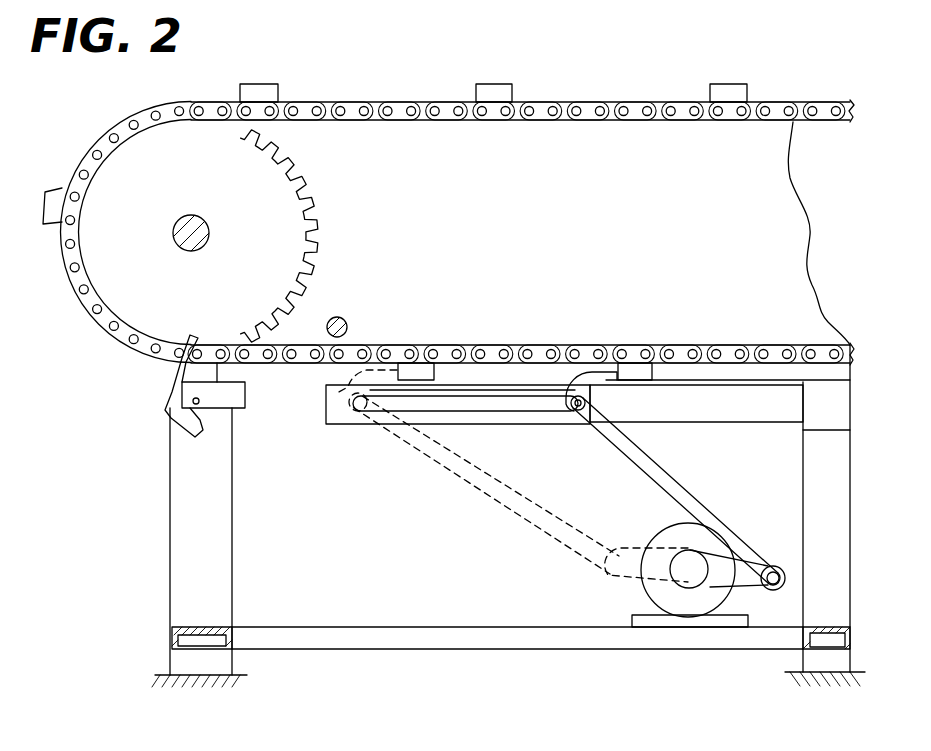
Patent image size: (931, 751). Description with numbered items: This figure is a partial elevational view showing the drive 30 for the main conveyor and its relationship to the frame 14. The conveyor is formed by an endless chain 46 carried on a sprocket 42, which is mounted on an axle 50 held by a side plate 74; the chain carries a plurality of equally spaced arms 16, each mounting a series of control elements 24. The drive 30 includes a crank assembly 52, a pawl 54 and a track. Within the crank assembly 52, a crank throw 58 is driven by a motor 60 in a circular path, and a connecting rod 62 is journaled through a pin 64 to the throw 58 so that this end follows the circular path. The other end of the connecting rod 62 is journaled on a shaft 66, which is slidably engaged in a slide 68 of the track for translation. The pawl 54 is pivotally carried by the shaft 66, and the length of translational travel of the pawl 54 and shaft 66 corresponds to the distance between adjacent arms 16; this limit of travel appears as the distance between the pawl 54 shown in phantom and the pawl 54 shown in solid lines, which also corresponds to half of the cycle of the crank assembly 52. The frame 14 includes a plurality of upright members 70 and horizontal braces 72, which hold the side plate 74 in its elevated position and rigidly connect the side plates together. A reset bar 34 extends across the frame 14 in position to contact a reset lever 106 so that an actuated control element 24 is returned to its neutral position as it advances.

The frame 14 is at (235, 530).
The arms 16 is at (268, 84).
The control elements 24 is at (208, 440).
The drive means 30 is at (662, 550).
The reset bar 34 is at (347, 326).
The sprocket 42 is at (282, 281).
The chain 46 is at (733, 344).
The axle 50 is at (199, 214).
The crank assembly 52 is at (567, 490).
The pawl 54 is at (592, 380).
The crank throw 58 is at (610, 578).
The motor 60 is at (663, 530).
The connecting rod 62 is at (640, 462).
The pin 64 is at (775, 568).
The shaft 66 is at (571, 412).
The slide 68 is at (465, 406).
The upright members 70 is at (815, 450).
The horizontal braces 72 is at (190, 627).
The side plate 74 is at (472, 207).
The reset lever 106 is at (192, 330).